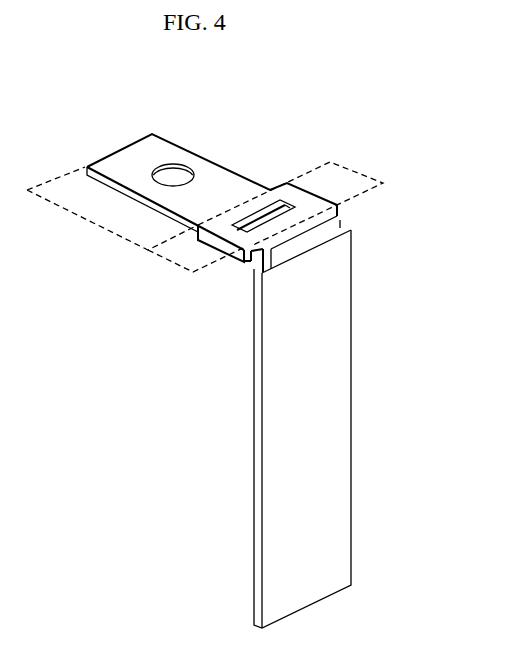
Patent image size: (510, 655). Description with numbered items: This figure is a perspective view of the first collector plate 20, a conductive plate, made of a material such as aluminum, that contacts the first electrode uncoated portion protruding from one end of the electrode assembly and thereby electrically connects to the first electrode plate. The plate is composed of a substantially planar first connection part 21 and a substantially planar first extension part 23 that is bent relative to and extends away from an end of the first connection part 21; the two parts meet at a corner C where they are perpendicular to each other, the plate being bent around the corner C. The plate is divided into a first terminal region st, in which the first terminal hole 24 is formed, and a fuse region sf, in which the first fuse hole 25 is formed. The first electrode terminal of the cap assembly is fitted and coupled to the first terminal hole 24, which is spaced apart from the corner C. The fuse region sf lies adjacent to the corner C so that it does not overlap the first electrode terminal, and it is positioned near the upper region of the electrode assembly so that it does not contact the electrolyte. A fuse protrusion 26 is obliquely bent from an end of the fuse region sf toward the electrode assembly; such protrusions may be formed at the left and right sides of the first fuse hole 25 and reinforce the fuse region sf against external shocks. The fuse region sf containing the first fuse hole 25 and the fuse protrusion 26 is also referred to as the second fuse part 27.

The first collector plate 20 is at (379, 208).
The first connection part 21 is at (135, 153).
The first extension part 23 is at (328, 361).
The first terminal hole 24 is at (167, 163).
The first fuse hole 25 is at (266, 214).
The fuse protrusion 26 is at (240, 255).
The second fuse part 27 is at (357, 173).
The corner C is at (307, 237).
The first terminal region st is at (112, 208).
The fuse region sf is at (195, 267).